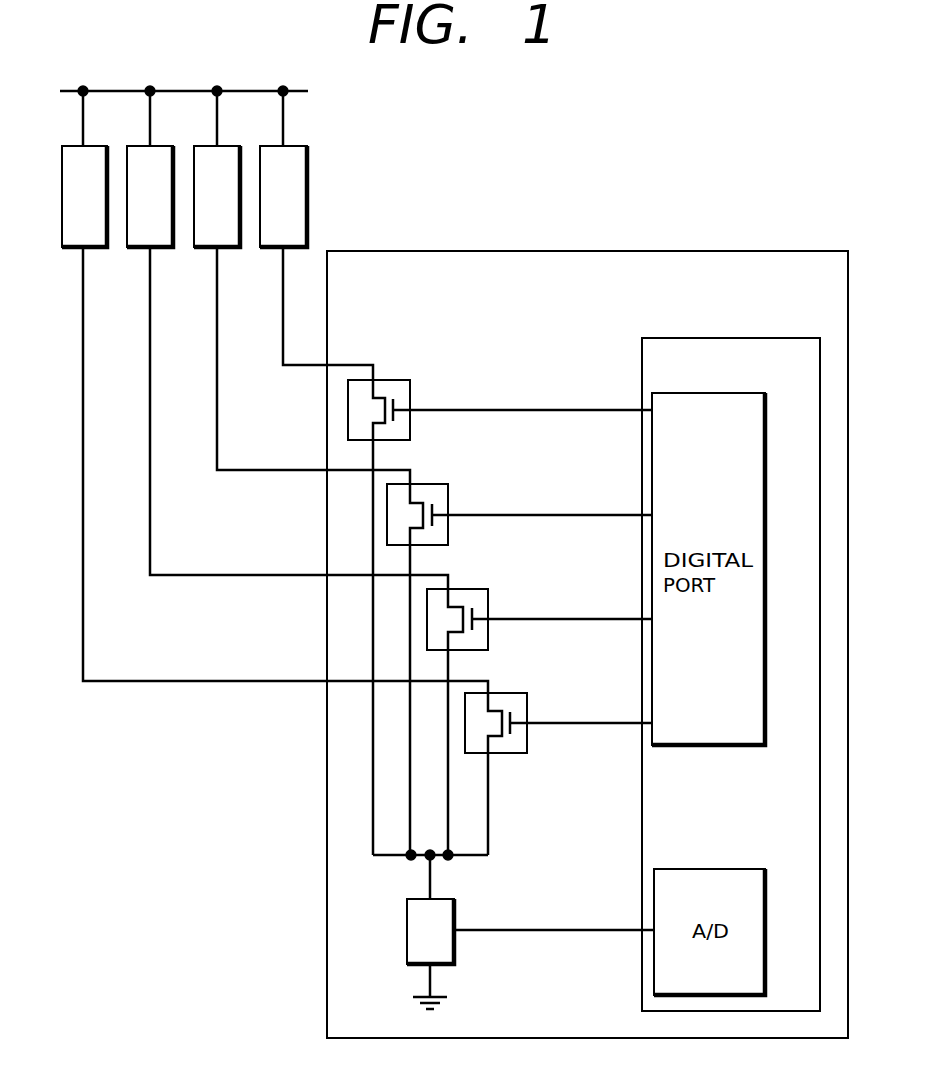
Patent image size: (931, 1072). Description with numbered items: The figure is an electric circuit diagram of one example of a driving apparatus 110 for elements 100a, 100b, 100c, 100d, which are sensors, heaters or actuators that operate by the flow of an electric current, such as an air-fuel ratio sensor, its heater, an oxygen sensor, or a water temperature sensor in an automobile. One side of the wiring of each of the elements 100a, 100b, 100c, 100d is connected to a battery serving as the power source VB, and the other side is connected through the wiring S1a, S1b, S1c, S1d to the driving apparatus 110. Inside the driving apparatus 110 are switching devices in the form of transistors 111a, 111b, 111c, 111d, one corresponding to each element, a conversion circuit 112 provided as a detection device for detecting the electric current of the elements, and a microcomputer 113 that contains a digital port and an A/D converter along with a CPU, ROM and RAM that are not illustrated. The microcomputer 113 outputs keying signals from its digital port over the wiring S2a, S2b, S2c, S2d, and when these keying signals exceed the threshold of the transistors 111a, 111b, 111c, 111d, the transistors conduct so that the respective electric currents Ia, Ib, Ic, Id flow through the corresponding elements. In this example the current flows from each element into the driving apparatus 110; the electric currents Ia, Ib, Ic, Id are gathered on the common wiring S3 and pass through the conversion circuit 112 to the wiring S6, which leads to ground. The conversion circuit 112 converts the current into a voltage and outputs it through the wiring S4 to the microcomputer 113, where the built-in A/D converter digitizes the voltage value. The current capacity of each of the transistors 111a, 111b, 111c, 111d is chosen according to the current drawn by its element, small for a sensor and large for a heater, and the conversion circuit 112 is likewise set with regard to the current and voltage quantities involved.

The power source VB is at (87, 88).
The element 100a is at (312, 128).
The element 100b is at (246, 128).
The element 100c is at (179, 128).
The element 100d is at (112, 128).
The driving apparatus 110 is at (753, 251).
The microcomputer 113 is at (753, 338).
The transistor 111a is at (385, 380).
The transistor 111b is at (423, 484).
The transistor 111c is at (463, 589).
The transistor 111d is at (502, 693).
The conversion circuit 112 is at (456, 915).
The load line signal S1a is at (308, 368).
The load line signal S1b is at (308, 472).
The load line signal S1c is at (308, 577).
The load line signal S1d is at (308, 683).
The wiring S2a is at (567, 410).
The wiring S2b is at (567, 515).
The wiring S2c is at (567, 619).
The wiring S2d is at (567, 723).
The wiring S3 is at (429, 878).
The wiring S4 is at (572, 932).
The wiring S6 is at (429, 980).
The electric current Ia is at (362, 832).
The electric current Ib is at (399, 832).
The electric current Ic is at (438, 832).
The electric current Id is at (478, 832).